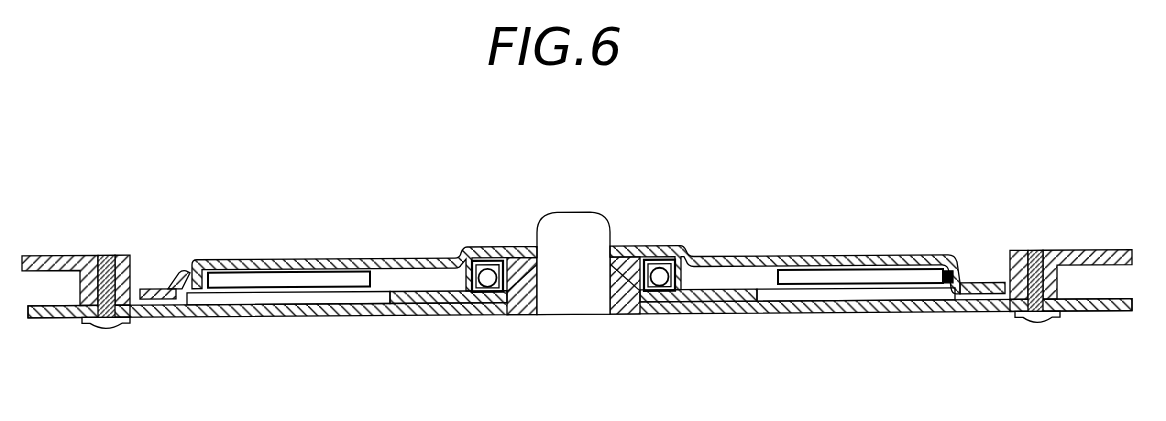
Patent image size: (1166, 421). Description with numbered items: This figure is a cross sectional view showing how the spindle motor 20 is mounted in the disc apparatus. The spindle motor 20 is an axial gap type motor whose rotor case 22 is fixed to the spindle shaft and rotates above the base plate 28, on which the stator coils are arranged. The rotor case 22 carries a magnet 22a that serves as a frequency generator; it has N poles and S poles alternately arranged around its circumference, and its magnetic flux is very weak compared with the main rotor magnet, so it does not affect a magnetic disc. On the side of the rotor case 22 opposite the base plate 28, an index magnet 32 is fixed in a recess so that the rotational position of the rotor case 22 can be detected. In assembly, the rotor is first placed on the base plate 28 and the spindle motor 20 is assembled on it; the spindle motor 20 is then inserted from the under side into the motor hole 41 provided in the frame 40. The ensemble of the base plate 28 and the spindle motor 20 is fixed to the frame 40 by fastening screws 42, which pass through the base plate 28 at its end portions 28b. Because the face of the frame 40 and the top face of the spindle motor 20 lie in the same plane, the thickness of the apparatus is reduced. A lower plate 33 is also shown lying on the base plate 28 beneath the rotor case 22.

The spindle motor 20 is at (771, 256).
The rotor case 22 is at (850, 262).
The magnet 22a is at (990, 289).
The base plate 28 is at (318, 319).
The base plate end portion 28b is at (100, 326).
The index magnet 32 is at (948, 277).
The lower plate 33 is at (950, 307).
The frame 40 is at (65, 254).
The motor hole 41 is at (133, 271).
The screws 42 is at (118, 324).